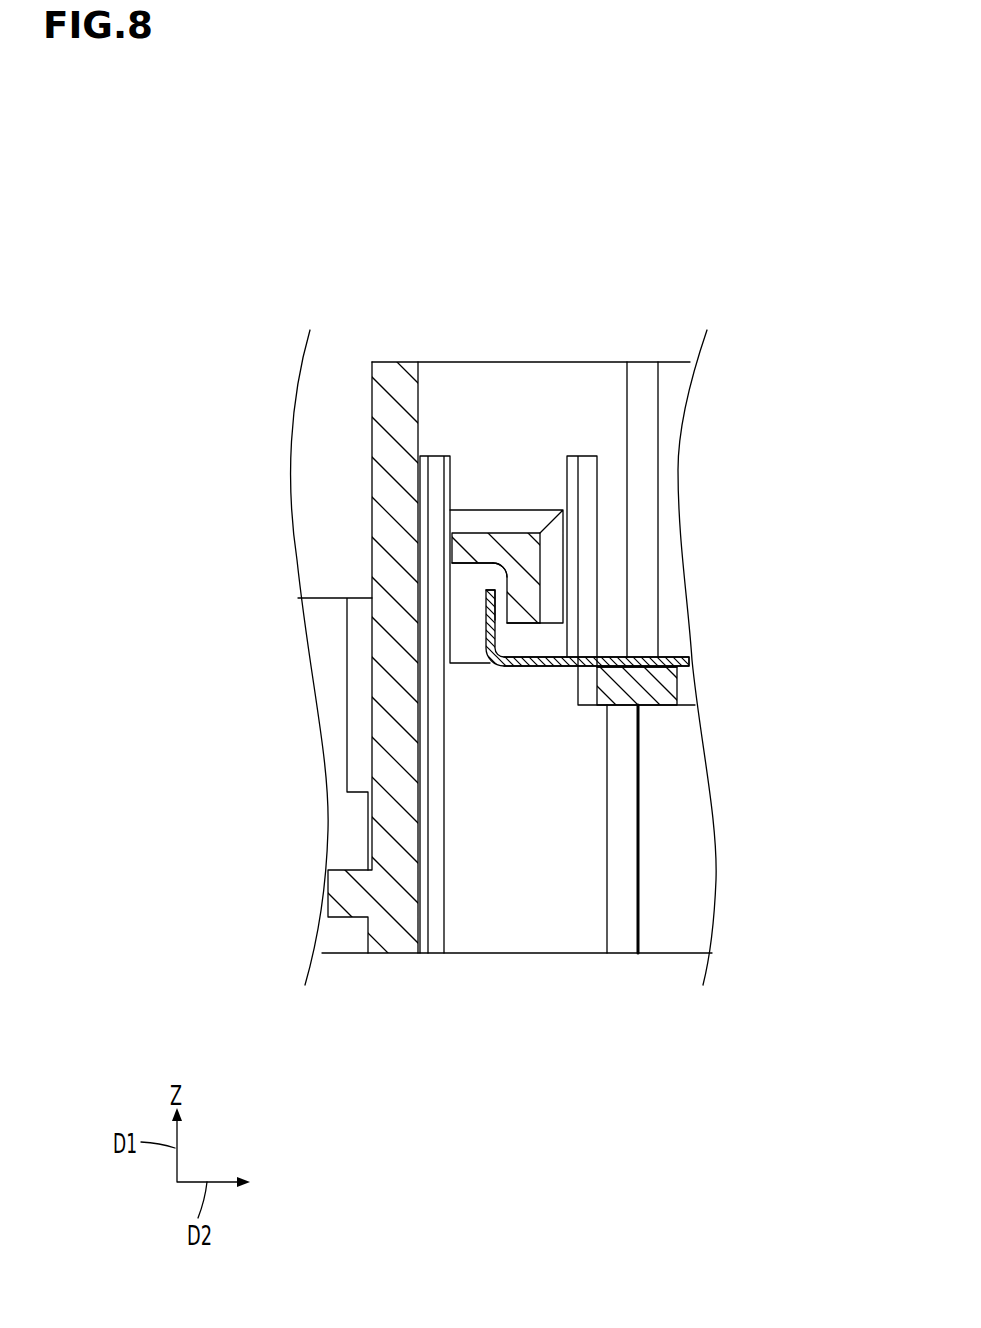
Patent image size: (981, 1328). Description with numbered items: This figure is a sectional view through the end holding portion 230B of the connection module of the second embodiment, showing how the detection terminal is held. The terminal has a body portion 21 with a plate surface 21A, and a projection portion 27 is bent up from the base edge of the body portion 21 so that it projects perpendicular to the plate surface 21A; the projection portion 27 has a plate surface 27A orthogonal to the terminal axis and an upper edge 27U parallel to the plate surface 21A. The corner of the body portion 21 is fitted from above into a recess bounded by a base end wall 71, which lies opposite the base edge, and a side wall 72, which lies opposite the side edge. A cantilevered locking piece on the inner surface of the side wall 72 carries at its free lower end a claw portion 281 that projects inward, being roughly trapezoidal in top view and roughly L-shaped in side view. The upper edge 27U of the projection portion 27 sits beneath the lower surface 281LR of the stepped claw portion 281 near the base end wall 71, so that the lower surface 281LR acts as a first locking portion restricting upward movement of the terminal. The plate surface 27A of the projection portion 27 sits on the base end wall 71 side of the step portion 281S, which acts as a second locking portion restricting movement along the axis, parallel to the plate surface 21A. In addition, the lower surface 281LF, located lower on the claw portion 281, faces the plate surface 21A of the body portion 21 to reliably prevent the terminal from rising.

The base end wall 71 is at (397, 387).
The side wall 72 is at (503, 387).
The end holding portion 230B is at (667, 328).
The claw portion 281 is at (512, 543).
The lower surface 281LR is at (468, 558).
The step portion 281S is at (506, 600).
The lower surface 281LF is at (525, 627).
The projection portion 27 is at (483, 640).
The upper edge 27U is at (483, 587).
The plate surface 27A is at (517, 648).
The body portion 21 is at (607, 657).
The plate surface 21A is at (638, 657).